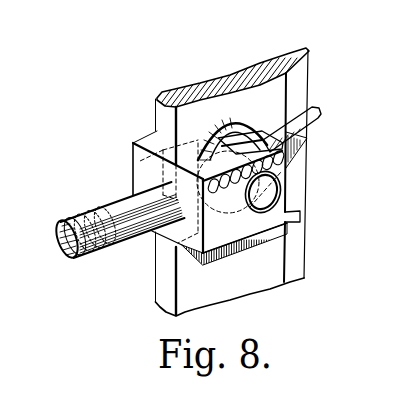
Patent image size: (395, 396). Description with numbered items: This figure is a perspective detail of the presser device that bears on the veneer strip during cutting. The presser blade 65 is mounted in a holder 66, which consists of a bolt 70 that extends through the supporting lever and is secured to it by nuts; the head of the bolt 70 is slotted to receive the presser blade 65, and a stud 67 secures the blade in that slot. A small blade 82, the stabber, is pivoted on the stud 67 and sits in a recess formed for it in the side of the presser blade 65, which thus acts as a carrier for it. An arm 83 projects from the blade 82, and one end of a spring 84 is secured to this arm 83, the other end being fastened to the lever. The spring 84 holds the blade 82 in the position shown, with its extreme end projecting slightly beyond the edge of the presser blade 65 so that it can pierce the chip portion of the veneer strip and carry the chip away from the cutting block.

The presser blade 65 is at (230, 73).
The blade holder 66 is at (138, 157).
The stud 67 is at (273, 198).
The bolt 70 is at (72, 213).
The small blade 82 is at (317, 118).
The arm 83 is at (263, 140).
The spring 84 is at (228, 190).